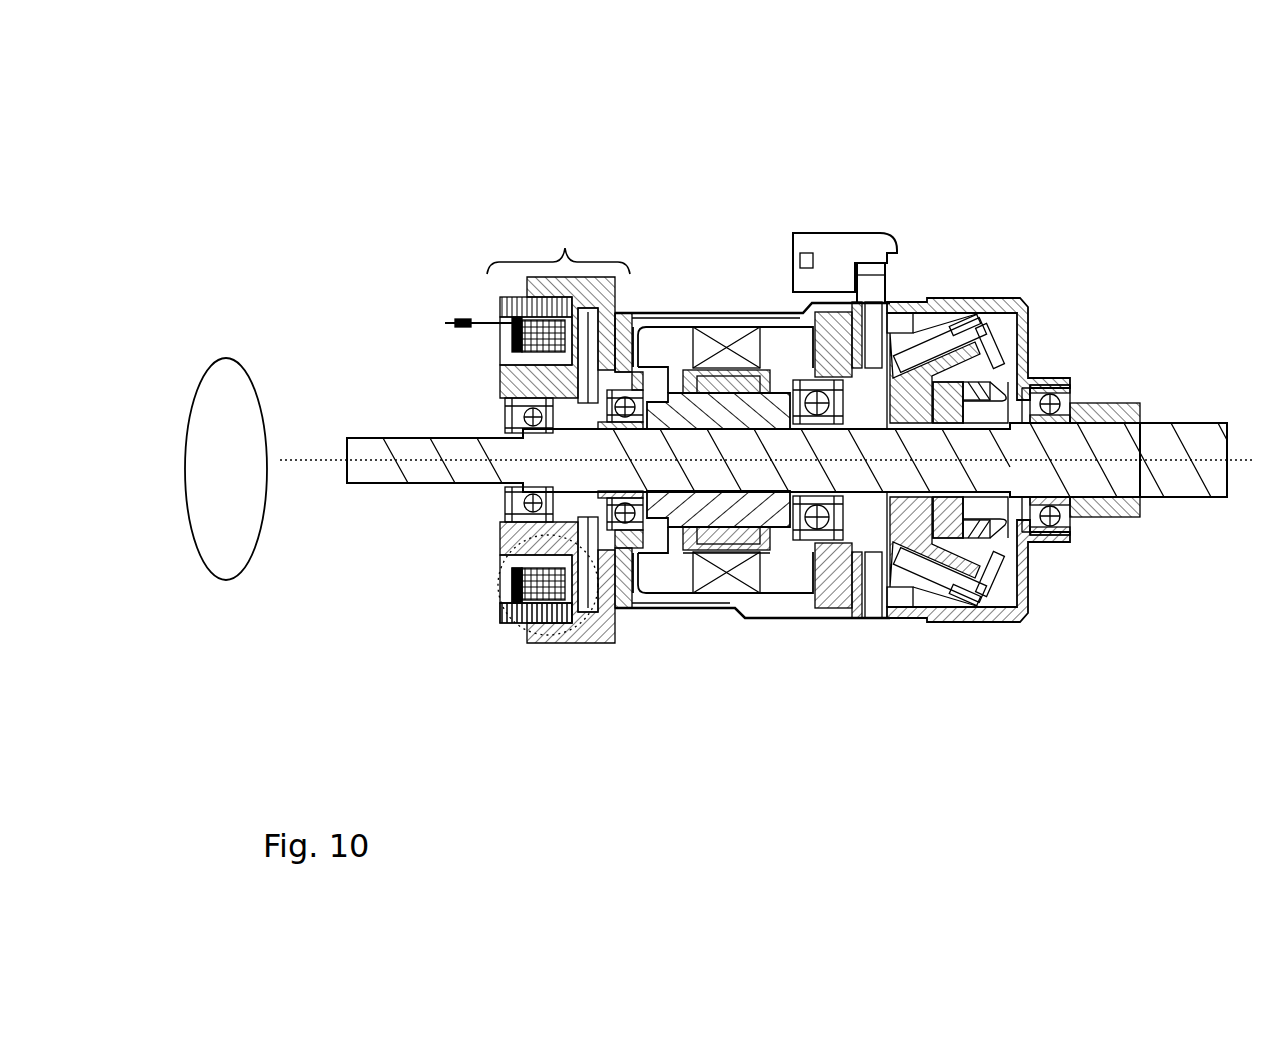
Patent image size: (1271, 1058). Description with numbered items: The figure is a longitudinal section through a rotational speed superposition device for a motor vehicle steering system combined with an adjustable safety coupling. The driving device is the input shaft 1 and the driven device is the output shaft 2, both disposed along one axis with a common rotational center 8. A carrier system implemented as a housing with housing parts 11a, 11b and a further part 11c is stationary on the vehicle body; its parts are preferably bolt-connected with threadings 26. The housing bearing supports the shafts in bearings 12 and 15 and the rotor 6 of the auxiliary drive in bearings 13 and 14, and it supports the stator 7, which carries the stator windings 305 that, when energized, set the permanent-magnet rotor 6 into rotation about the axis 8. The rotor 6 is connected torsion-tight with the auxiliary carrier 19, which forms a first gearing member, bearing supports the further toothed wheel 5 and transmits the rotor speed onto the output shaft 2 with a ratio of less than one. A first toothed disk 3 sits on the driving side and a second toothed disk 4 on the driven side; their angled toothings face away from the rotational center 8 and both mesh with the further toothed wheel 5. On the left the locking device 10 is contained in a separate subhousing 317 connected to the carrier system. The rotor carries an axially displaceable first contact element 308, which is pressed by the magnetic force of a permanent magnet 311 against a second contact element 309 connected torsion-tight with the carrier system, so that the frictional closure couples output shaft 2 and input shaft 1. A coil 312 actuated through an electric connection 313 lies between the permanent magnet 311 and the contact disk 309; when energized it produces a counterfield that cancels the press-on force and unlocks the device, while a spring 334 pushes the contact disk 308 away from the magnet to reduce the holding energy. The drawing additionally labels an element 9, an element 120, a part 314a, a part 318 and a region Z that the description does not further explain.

The input shaft 1 is at (410, 452).
The output shaft 2 is at (1126, 443).
The first toothed disk 3 is at (951, 396).
The second toothed disk 4 is at (975, 385).
The further toothed wheel 5 is at (963, 327).
The rotor 6 is at (730, 530).
The stator 7 is at (740, 348).
The rotational center 8 is at (1163, 460).
The electrical connector 9 is at (835, 253).
The locking device 10 is at (558, 243).
The housing part 11a is at (670, 320).
The housing part 11b is at (978, 305).
The carrier system part 11c is at (602, 635).
The bearing 12 is at (506, 512).
The bearing 13 is at (662, 497).
The bearing 14 is at (815, 543).
The bearing 15 is at (1048, 557).
The auxiliary carrier 19 is at (900, 390).
The threadings 26 is at (910, 305).
The wheel 120 is at (218, 580).
The stator windings 305 is at (690, 347).
The first contact element 308 is at (583, 590).
The second contact element 309 is at (573, 577).
The permanent magnet 311 is at (512, 322).
The coil 312 is at (543, 342).
The electric connection 313 is at (470, 322).
The terminal 314a is at (515, 558).
The subhousing 317 is at (513, 615).
The magnet holder 318 is at (737, 555).
The spring 334 is at (580, 387).
The detail region Z is at (562, 635).